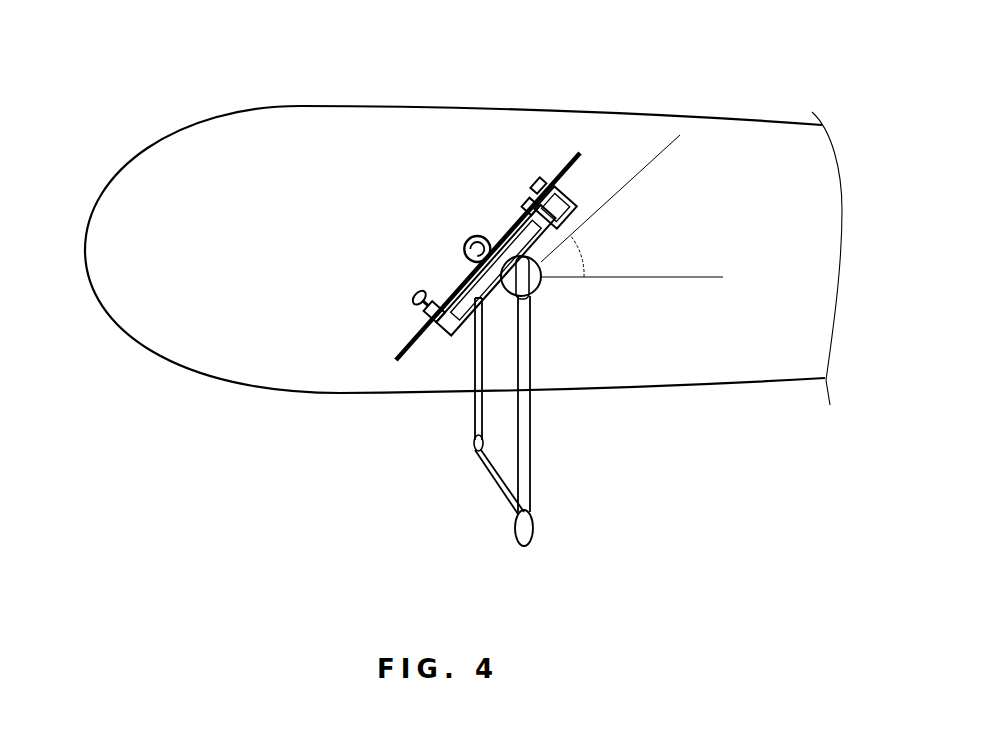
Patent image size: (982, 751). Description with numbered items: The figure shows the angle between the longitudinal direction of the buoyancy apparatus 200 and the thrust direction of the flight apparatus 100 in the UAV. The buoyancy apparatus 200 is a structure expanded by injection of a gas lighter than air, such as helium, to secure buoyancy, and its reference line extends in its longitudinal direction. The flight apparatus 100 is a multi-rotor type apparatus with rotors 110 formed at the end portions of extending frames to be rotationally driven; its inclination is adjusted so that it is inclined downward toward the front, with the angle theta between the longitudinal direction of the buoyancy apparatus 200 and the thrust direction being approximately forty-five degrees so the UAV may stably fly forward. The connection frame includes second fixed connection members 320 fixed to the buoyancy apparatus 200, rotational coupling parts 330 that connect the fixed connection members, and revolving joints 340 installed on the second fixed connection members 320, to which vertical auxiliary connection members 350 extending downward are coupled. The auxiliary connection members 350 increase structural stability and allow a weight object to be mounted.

The flight apparatus 100 is at (445, 222).
The rotors 110 is at (563, 160).
The buoyancy apparatus 200 is at (183, 130).
The second fixed connection members 320 is at (543, 284).
The rotational coupling parts 330 is at (511, 297).
The revolving joints 340 is at (531, 298).
The auxiliary connection members 350 is at (535, 486).